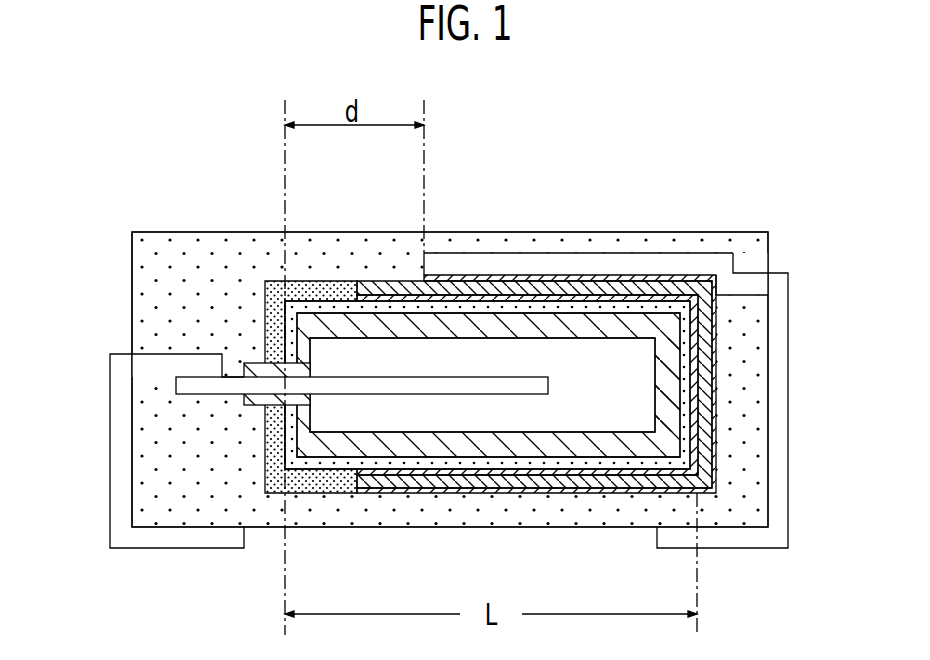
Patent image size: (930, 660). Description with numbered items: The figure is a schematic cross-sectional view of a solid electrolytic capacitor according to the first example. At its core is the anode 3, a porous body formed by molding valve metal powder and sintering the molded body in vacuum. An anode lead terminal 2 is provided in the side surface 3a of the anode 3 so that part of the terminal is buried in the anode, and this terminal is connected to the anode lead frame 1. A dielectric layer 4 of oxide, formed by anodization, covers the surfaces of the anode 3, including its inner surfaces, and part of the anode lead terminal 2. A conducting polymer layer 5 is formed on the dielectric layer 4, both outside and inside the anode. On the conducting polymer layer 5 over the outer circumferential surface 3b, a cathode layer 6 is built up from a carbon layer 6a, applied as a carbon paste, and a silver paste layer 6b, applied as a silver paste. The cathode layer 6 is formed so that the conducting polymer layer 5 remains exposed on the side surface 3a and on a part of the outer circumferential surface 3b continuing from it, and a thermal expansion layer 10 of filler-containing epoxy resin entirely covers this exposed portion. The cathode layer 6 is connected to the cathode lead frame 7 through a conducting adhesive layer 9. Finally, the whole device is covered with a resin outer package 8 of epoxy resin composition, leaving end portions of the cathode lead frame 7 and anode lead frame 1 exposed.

The anode lead frame 1 is at (177, 484).
The anode lead terminal 2 is at (303, 383).
The anode 3 is at (462, 386).
The side surface 3a is at (313, 483).
The outer circumferential surface 3b is at (639, 385).
The dielectric layer 4 is at (482, 300).
The conducting polymer layer 5 is at (487, 319).
The cathode layer 6 is at (514, 311).
The carbon layer 6a is at (527, 322).
The silver paste layer 6b is at (519, 328).
The cathode lead frame 7 is at (722, 433).
The resin outer package 8 is at (450, 348).
The conducting adhesive layer 9 is at (536, 331).
The thermal expansion layer 10 is at (295, 441).